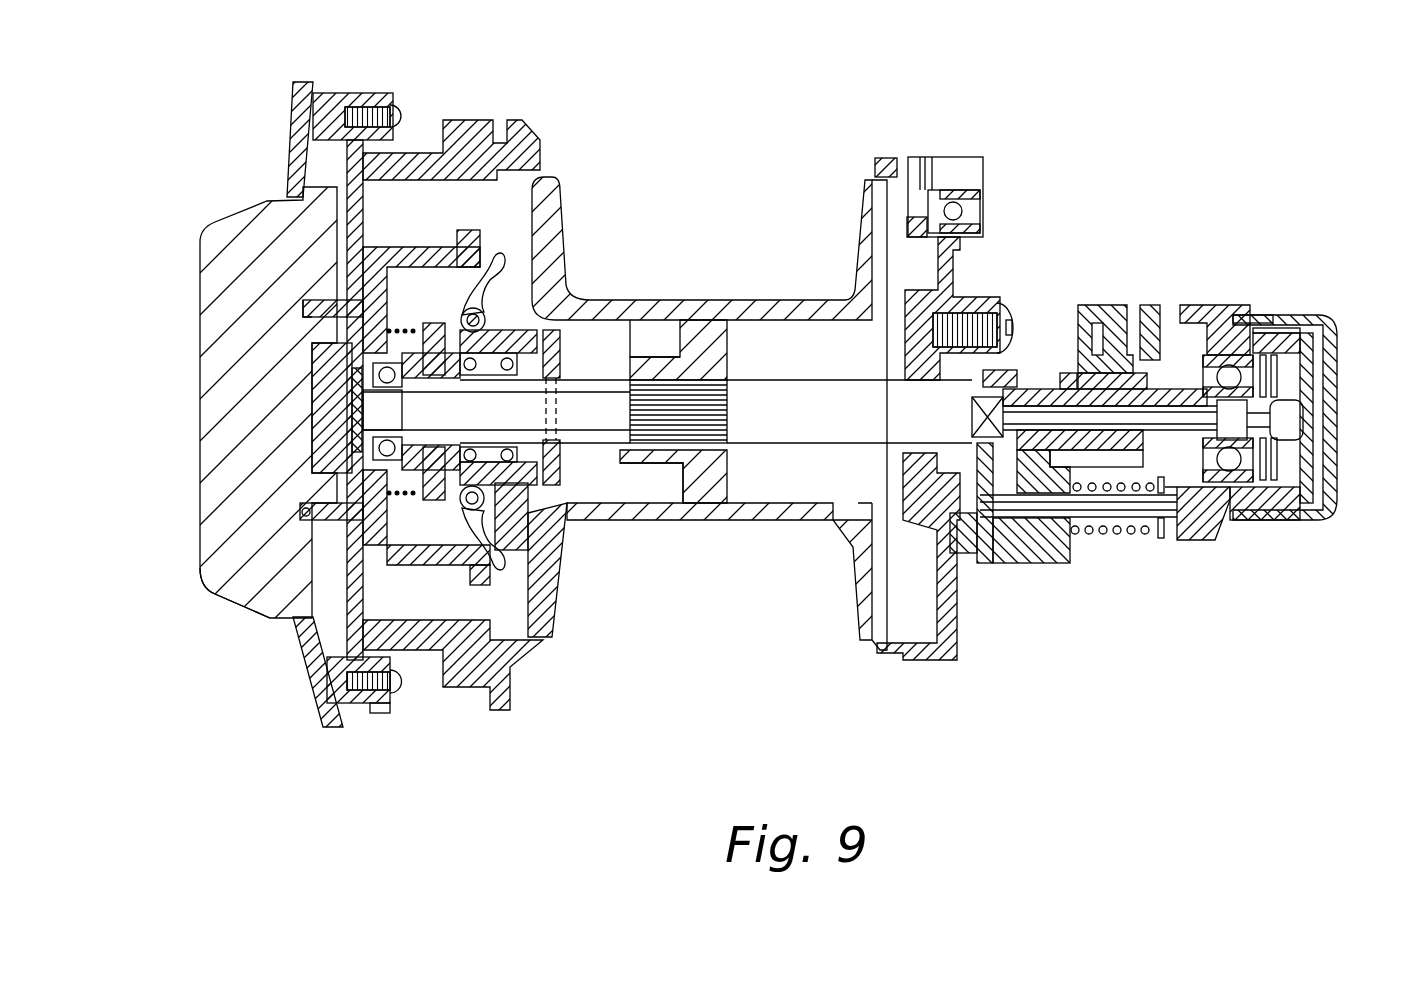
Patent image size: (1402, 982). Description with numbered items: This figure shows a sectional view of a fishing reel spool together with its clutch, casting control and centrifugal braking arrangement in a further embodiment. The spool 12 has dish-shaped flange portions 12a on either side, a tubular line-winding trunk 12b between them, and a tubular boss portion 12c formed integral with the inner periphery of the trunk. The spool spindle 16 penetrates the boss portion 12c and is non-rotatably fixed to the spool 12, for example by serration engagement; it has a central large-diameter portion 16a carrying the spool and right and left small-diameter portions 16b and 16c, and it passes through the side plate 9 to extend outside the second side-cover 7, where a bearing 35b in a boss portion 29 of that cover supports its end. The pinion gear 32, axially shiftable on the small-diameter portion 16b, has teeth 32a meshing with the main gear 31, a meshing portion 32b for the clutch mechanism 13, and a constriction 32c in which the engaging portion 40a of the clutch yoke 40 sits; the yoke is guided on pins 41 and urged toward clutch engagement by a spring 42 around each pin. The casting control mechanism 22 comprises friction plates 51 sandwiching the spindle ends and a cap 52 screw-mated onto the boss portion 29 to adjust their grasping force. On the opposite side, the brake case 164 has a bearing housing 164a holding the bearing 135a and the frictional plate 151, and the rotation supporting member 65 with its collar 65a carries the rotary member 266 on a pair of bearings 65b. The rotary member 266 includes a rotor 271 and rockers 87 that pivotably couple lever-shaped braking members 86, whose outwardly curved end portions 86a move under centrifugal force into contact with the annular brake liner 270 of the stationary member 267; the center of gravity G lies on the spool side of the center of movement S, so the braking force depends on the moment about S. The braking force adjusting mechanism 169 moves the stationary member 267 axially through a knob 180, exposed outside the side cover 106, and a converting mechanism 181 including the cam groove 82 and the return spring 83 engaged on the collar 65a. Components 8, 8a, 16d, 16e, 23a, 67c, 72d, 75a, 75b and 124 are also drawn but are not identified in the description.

The second side-cover 7 is at (1201, 518).
The housing 8 is at (508, 688).
The housing upper wall 8a is at (520, 165).
The side plate 9 is at (953, 270).
The spool 12 is at (741, 300).
The flange portions 12a is at (553, 212).
The line-winding trunk 12b is at (708, 298).
The boss portion 12c is at (728, 350).
The clutch mechanism 13 is at (957, 407).
The spool spindle 16 is at (764, 431).
The large-diameter portion 16a is at (809, 432).
The small-diameter portion 16b is at (1101, 520).
The small-diameter portion 16c is at (556, 412).
The spline 16d is at (668, 432).
The shaft shoulder 16e is at (985, 435).
The casting control mechanism 22 is at (1304, 298).
The body 23a is at (195, 402).
The boss portion 29 is at (1220, 352).
The main gear 31 is at (1090, 303).
The pinion gear 32 is at (1041, 375).
The teeth 32a is at (1152, 378).
The meshing portion 32b is at (1031, 565).
The constriction 32c is at (1026, 385).
The bearing 35b is at (1220, 328).
The clutch yoke 40 is at (1060, 545).
The engaging portion 40a is at (1120, 345).
The pins 41 is at (1128, 535).
The spring 42 is at (1150, 536).
The friction plates 51 is at (1326, 380).
The cap 52 is at (1329, 522).
The rotation supporting member 65 is at (441, 460).
The collar 65a is at (432, 326).
The bearings 65b is at (520, 318).
The bracket 67c is at (325, 304).
The engagement member 72d is at (539, 510).
The screw 75a is at (366, 112).
The screw 75b is at (383, 713).
The cam groove 82 is at (322, 306).
The return spring 83 is at (300, 318).
The braking members 86 is at (537, 190).
The end portion 86a is at (500, 190).
The rockers 87 is at (530, 278).
The side cover 106 is at (315, 683).
The bearing 124 is at (560, 355).
The bearing 135a is at (300, 510).
The frictional plate 151 is at (357, 412).
The brake case 164 is at (487, 175).
The bearing housing 164a is at (320, 353).
The braking force adjusting mechanism 169 is at (368, 438).
The knob 180 is at (240, 596).
The converting mechanism 181 is at (305, 524).
The rotary member 266 is at (572, 512).
The stationary member 267 is at (393, 250).
The brake liner 270 is at (474, 232).
The rotor 271 is at (560, 362).
The center of gravity G is at (543, 268).
The center of movement S is at (463, 306).